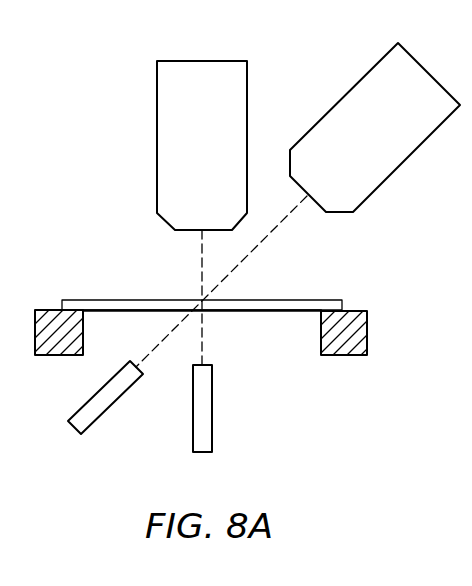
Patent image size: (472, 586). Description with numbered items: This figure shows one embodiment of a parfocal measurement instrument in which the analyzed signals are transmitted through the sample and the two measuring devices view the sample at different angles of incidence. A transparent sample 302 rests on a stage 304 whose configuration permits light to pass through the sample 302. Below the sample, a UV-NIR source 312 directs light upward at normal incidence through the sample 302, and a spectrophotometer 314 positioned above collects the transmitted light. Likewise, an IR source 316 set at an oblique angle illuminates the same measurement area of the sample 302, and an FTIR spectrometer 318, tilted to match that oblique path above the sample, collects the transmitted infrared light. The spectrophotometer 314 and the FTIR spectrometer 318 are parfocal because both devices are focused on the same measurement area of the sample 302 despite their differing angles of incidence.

The transparent sample 302 is at (314, 300).
The stage 304 is at (354, 356).
The UV-NIR source 312 is at (212, 437).
The spectrophotometer 314 is at (185, 142).
The IR source 316 is at (100, 420).
The FTIR spectrometer 318 is at (355, 142).